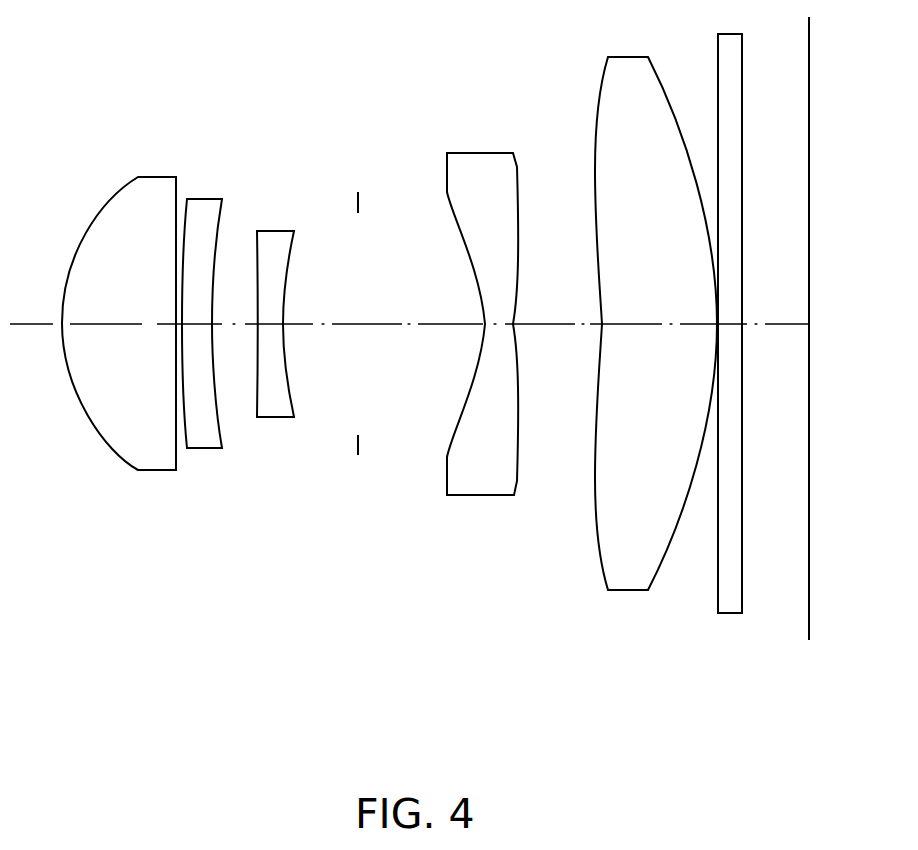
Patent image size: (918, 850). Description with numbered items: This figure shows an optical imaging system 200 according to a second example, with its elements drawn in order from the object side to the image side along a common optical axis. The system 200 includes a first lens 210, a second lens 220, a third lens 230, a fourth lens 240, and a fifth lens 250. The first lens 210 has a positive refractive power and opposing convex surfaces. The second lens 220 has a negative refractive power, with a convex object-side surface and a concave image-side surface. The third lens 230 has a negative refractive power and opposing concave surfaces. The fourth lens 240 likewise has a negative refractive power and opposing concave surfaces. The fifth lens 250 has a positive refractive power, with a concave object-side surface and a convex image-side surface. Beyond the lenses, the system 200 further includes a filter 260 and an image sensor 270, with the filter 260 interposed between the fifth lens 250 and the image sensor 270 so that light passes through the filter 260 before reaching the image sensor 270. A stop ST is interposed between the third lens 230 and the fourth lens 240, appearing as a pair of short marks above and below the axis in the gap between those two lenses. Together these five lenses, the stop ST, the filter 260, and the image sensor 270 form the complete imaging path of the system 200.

The optical imaging system 200 is at (282, 97).
The first lens 210 is at (127, 450).
The second lens 220 is at (203, 438).
The third lens 230 is at (270, 408).
The fourth lens 240 is at (478, 482).
The fifth lens 250 is at (625, 578).
The filter 260 is at (732, 605).
The image sensor 270 is at (809, 640).
The stop ST is at (360, 197).